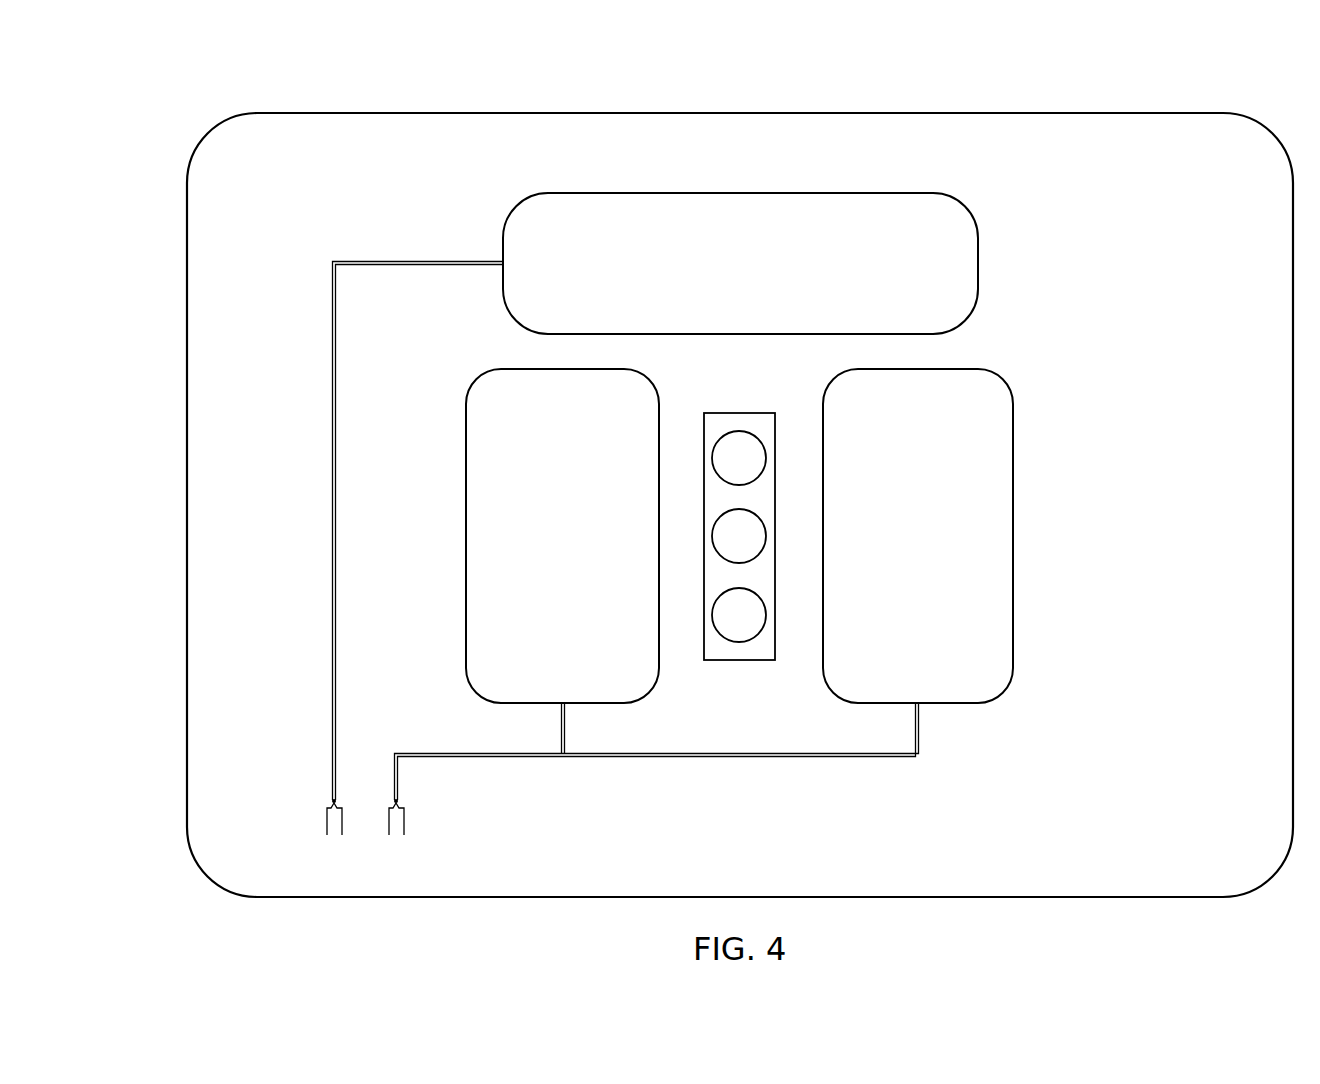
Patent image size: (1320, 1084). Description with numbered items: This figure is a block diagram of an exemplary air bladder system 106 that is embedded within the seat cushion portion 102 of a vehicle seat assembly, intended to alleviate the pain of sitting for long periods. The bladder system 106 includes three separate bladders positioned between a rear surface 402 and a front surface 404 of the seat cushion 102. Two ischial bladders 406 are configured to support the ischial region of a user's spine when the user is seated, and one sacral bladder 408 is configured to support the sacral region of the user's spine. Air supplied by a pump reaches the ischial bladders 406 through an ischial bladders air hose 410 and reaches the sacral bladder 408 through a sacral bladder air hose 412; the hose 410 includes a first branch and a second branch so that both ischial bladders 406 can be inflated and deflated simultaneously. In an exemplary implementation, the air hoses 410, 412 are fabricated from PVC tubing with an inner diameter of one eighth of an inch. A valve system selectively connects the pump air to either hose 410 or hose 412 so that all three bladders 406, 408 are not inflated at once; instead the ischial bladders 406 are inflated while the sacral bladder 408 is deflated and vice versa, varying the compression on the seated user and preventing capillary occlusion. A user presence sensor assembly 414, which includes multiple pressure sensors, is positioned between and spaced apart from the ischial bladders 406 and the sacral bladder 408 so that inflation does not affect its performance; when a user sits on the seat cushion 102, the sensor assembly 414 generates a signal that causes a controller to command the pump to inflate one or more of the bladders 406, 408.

The seat cushion portion 102 is at (148, 112).
The air bladder system 106 is at (1142, 262).
The rear surface 402 is at (895, 113).
The front surface 404 is at (540, 897).
The ischial bladders 406 is at (487, 458).
The sacral bladder 408 is at (940, 248).
The ischial bladders air hose 410 is at (714, 753).
The sacral bladder air hose 412 is at (333, 412).
The user presence sensor assembly 414 is at (760, 430).